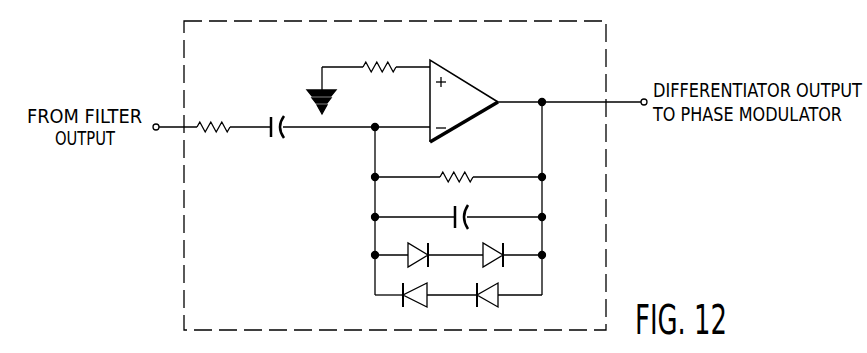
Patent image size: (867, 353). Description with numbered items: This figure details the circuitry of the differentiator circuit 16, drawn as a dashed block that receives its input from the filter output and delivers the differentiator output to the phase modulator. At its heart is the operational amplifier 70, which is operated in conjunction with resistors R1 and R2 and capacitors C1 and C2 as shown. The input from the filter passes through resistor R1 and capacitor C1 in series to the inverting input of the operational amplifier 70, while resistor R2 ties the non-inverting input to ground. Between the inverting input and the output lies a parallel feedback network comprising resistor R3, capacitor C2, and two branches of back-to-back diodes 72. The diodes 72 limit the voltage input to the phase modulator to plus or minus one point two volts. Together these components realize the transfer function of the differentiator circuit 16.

The differentiator circuit 16 is at (280, 244).
The operational amplifier 70 is at (472, 87).
The diodes 72 is at (488, 289).
The resistor R1 is at (213, 117).
The resistor R2 is at (368, 76).
The resistor R3 is at (458, 165).
The capacitor C1 is at (273, 140).
The capacitor C2 is at (458, 213).